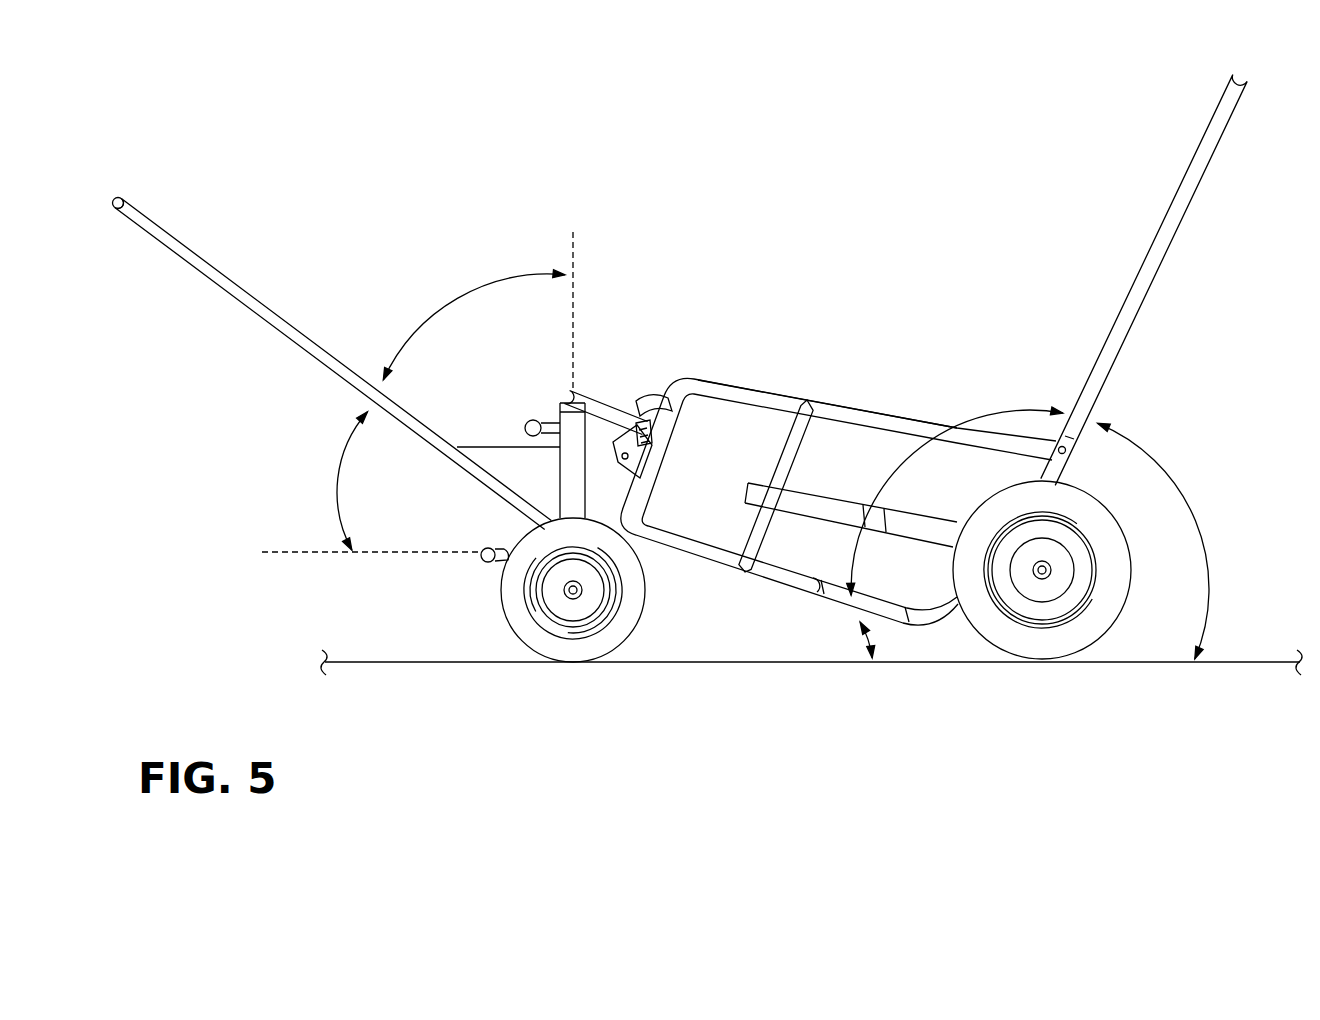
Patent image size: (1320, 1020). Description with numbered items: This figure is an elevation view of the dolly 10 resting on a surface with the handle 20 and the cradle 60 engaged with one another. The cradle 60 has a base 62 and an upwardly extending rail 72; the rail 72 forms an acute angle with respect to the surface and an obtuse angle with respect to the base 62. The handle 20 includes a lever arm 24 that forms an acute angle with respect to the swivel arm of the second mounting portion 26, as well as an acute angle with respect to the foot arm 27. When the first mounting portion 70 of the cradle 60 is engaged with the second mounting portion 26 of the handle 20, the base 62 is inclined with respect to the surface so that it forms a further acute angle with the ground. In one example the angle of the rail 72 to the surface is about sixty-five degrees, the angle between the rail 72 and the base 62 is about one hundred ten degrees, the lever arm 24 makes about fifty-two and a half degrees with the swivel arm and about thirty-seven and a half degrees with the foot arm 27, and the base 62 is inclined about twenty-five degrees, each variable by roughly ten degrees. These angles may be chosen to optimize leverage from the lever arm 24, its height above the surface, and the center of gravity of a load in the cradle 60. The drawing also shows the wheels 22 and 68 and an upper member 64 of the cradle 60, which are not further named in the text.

The dolly 10 is at (642, 205).
The handle 20 is at (387, 278).
The front wheel 22 is at (605, 642).
The lever arm 24 is at (288, 320).
The second mounting portion 26 is at (595, 390).
The foot arm 27 is at (486, 565).
The cradle 60 is at (838, 407).
The base 62 is at (811, 690).
The top rail 64 is at (827, 381).
The rear wheel 68 is at (1090, 640).
The first mounting portion 70 is at (658, 397).
The upwardly extending rail 72 is at (1165, 232).